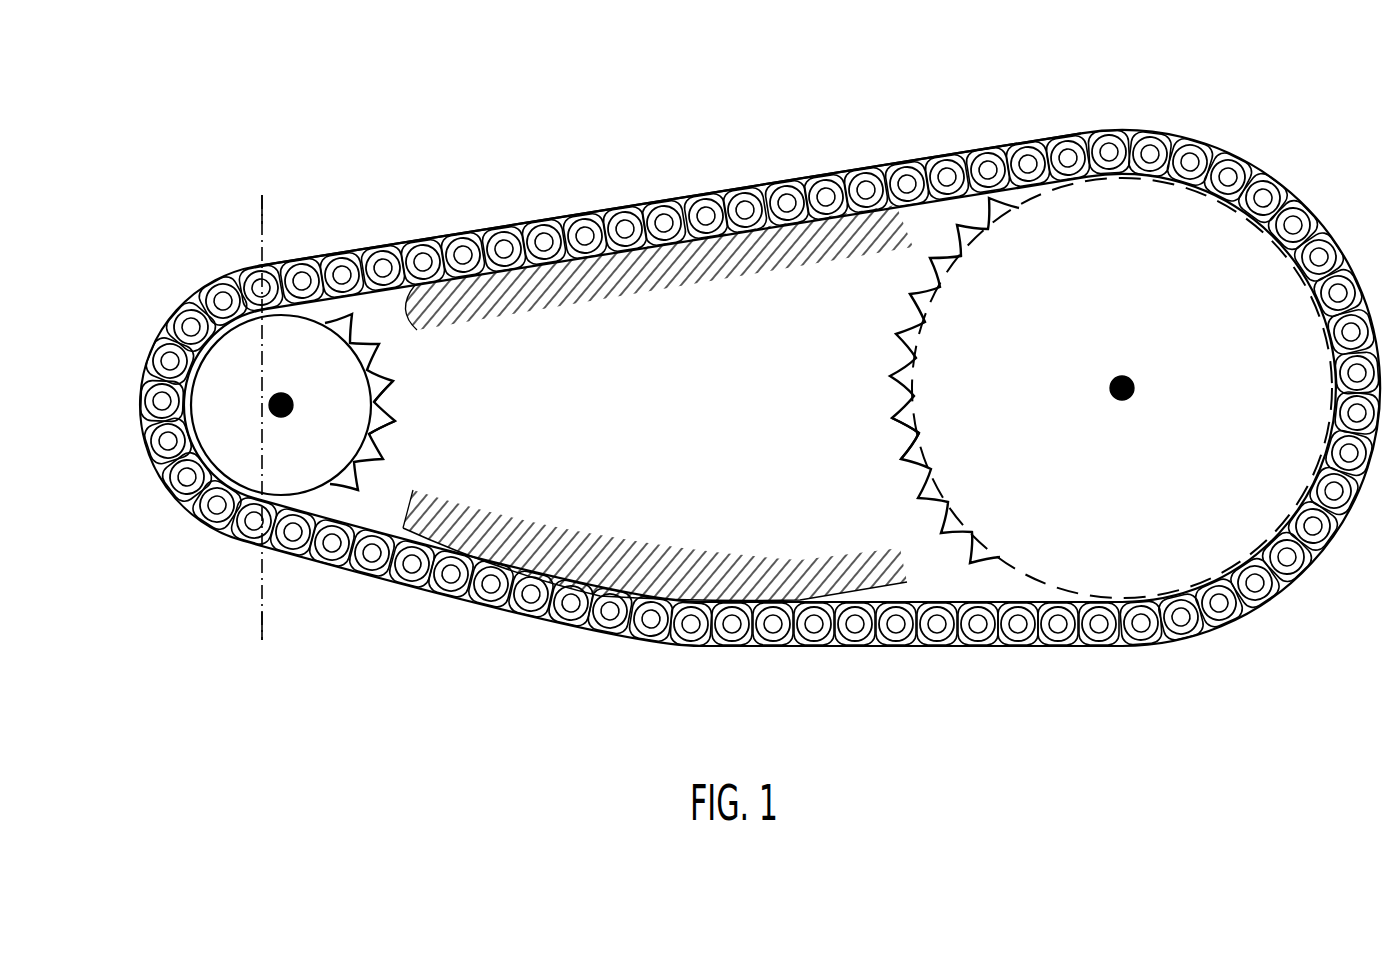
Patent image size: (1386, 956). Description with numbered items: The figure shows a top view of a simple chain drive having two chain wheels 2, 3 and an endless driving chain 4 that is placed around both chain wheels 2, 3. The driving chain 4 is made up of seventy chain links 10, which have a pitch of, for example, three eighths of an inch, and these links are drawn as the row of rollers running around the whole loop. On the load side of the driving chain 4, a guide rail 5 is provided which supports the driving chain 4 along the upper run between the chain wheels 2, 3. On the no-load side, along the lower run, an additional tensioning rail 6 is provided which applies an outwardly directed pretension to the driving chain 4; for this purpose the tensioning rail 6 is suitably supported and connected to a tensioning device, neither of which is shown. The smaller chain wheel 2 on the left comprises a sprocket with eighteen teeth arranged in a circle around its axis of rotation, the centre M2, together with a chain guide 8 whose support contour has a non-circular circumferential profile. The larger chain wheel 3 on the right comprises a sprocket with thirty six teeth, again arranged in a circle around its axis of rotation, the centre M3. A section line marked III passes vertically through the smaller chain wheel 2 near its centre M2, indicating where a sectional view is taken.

The chain wheel 2 is at (340, 335).
The chain wheel 3 is at (1066, 340).
The driving chain 4 is at (645, 205).
The guide rail 5 is at (763, 247).
The tensioning rail 6 is at (815, 572).
The chain guide 8 is at (346, 379).
The chain links 10 is at (527, 227).
The centre of the chain wheel M2 is at (279, 412).
The centre of the chain wheel M3 is at (1122, 392).
The section line III is at (258, 218).